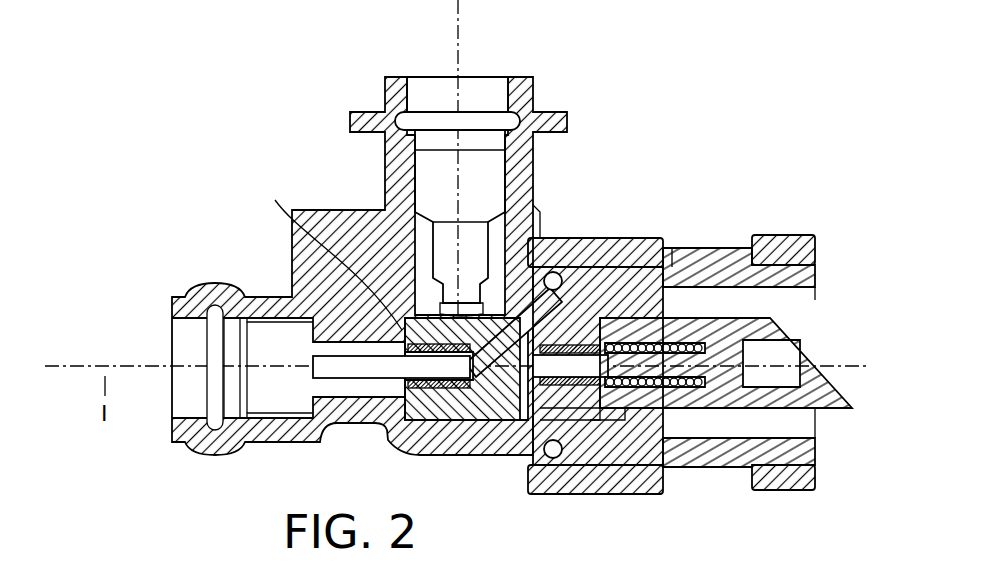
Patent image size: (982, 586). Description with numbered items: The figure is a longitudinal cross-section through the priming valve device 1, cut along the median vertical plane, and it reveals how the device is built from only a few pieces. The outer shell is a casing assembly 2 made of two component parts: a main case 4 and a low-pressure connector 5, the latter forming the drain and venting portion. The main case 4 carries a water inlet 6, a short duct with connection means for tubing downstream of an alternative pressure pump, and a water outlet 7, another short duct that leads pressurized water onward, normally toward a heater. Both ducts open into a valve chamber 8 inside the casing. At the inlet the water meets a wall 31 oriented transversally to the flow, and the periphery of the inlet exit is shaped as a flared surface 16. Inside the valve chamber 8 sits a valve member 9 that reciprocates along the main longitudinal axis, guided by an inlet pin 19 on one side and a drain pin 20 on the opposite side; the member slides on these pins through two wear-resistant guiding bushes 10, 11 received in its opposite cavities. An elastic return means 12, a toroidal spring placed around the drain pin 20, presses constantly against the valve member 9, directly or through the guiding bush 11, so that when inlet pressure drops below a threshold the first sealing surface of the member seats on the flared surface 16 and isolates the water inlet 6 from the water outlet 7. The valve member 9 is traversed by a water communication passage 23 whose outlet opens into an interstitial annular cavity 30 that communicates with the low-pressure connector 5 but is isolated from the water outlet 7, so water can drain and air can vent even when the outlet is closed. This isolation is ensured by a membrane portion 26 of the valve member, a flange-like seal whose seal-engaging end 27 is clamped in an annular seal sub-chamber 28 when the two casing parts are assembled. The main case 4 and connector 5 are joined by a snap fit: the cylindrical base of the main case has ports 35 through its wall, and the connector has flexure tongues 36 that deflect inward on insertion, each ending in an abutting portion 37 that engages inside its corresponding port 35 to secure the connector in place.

The priming valve device 1 is at (686, 156).
The casing assembly 2 is at (584, 238).
The main case 4 is at (342, 209).
The low-pressure connector 5 is at (838, 342).
The water inlet 6 is at (196, 337).
The water outlet 7 is at (480, 73).
The valve chamber 8 is at (422, 453).
The valve member 9 is at (447, 445).
The guiding bush 10 is at (409, 277).
The guiding bush 11 is at (598, 330).
The elastic return means 12 is at (688, 344).
The flared surface 16 is at (398, 426).
The inlet pin 19 is at (398, 360).
The drain pin 20 is at (622, 345).
The water communication passage 23 is at (478, 432).
The membrane portion 26 is at (538, 233).
The seal-engaging end 27 is at (556, 270).
The annular seal sub-chamber 28 is at (542, 456).
The interstitial annular cavity 30 is at (602, 440).
The wall 31 is at (395, 373).
The ports 35 is at (690, 493).
The flexure tongues 36 is at (818, 273).
The abutting portion 37 is at (760, 491).